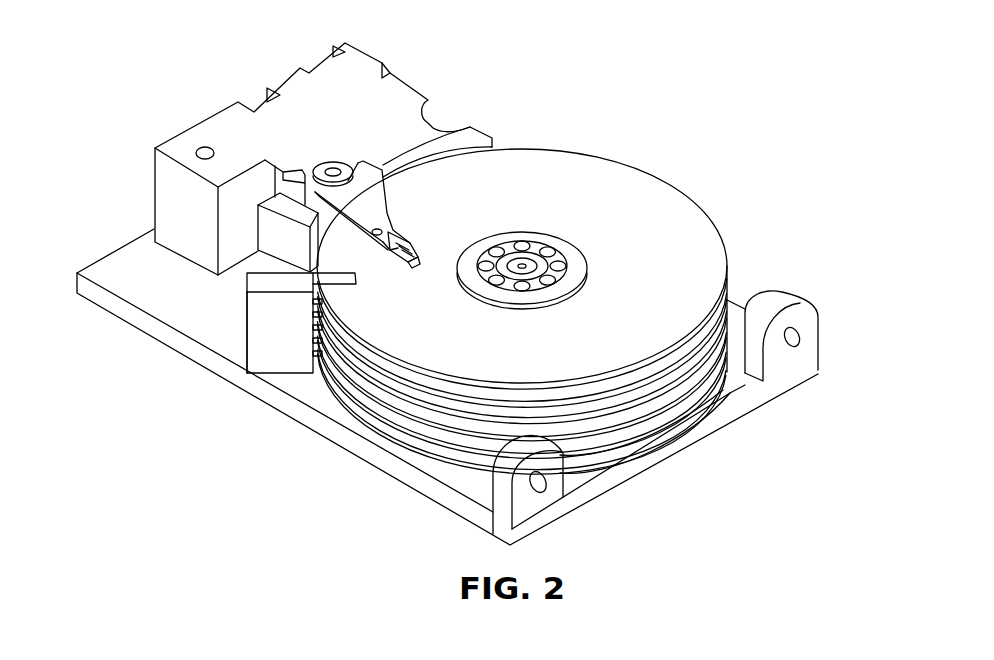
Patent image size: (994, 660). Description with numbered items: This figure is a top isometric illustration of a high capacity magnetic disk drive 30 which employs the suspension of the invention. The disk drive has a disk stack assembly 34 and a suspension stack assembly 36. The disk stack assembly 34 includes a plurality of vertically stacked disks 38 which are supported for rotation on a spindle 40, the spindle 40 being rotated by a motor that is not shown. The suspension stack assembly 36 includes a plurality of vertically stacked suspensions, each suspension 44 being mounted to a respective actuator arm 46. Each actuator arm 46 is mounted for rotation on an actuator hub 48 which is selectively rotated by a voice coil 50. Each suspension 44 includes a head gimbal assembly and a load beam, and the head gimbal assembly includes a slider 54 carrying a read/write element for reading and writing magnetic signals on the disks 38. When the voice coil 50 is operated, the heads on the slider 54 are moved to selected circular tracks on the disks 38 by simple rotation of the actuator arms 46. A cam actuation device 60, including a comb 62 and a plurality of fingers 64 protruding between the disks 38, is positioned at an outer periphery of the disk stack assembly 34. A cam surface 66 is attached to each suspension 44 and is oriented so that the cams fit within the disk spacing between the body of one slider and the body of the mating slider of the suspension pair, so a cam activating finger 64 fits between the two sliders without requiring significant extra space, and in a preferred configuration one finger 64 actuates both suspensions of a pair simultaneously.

The magnetic disk drive 30 is at (605, 90).
The disk stack assembly 34 is at (652, 168).
The suspension stack assembly 36 is at (314, 214).
The disks 38 is at (697, 377).
The spindle 40 is at (523, 265).
The suspension 44 is at (411, 238).
The actuator arm 46 is at (388, 213).
The actuator hub 48 is at (334, 170).
The voice coil 50 is at (218, 118).
The slider 54 is at (384, 247).
The cam actuation device 60 is at (232, 312).
The comb 62 is at (305, 373).
The fingers 64 is at (363, 281).
The cam surface 66 is at (413, 259).